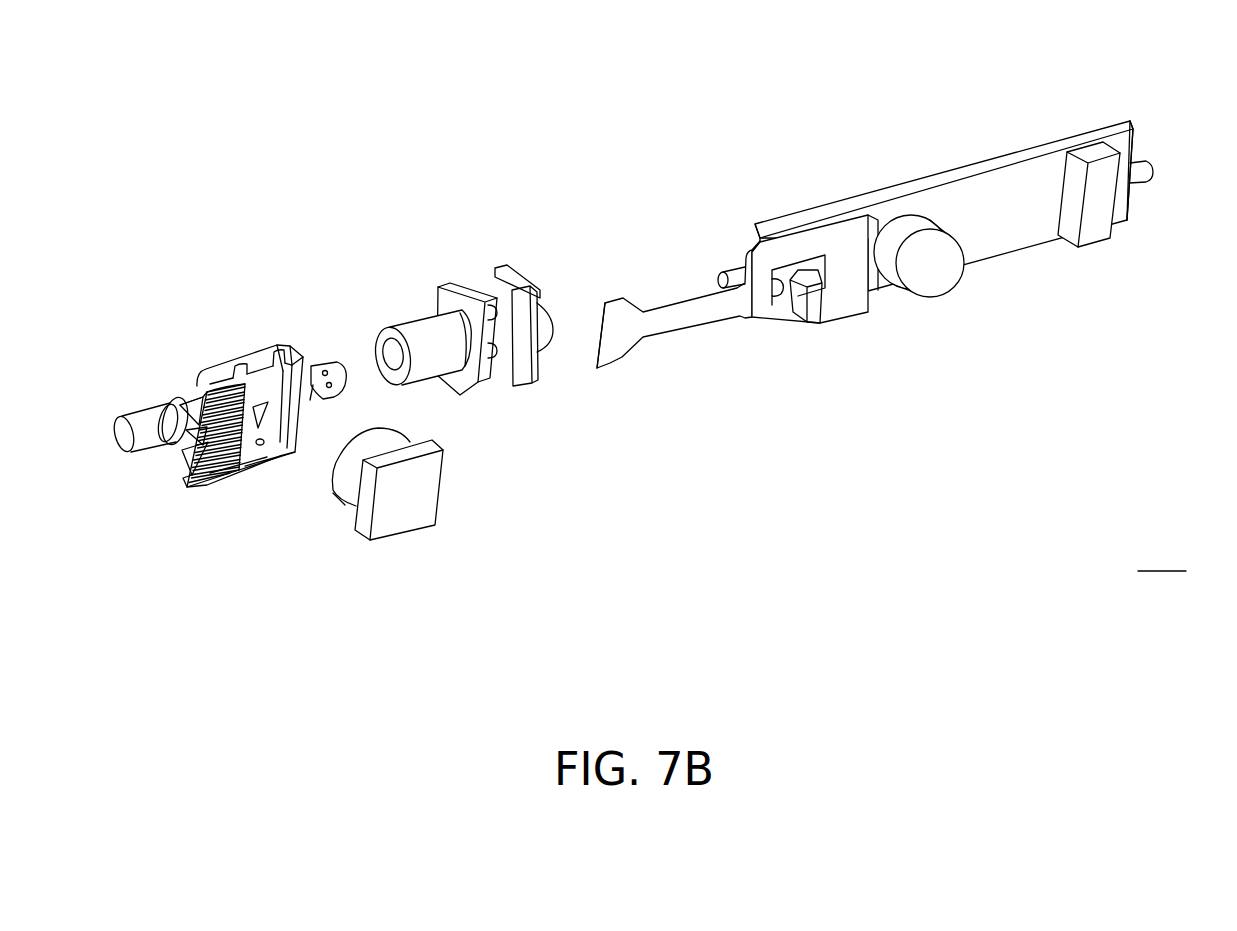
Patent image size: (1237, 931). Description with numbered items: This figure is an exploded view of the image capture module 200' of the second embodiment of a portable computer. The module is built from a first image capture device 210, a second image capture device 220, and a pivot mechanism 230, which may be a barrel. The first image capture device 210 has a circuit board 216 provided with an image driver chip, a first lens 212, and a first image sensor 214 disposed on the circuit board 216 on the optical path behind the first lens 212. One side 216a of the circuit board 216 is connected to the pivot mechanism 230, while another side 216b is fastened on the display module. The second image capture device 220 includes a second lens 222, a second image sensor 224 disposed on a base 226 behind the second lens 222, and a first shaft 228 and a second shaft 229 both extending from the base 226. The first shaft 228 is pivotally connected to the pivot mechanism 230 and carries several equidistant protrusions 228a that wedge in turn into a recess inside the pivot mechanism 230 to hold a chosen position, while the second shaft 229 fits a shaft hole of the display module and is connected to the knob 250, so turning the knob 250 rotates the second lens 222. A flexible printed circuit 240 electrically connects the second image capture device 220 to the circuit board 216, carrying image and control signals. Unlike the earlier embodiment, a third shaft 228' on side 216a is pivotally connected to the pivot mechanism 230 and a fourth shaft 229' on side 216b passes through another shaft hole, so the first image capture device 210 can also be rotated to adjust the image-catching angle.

The image capture module 200' is at (1162, 553).
The first image capture device 210 is at (958, 78).
The first lens 212 is at (937, 233).
The first image sensor 214 is at (883, 213).
The circuit board 216 is at (1007, 182).
The side of the circuit board 216a is at (752, 234).
The another side of the circuit board 216b is at (1140, 140).
The second image capture device 220 is at (394, 626).
The second lens 222 is at (343, 487).
The second image sensor 224 is at (387, 523).
The base 226 is at (253, 463).
The first shaft 228 is at (249, 487).
The protrusions 228a is at (320, 360).
The third shaft 228' is at (699, 245).
The second shaft 229 is at (153, 512).
The fourth shaft 229' is at (1175, 168).
The pivot mechanism 230 is at (420, 333).
The flexible printed circuit 240 is at (655, 327).
The knob 250 is at (203, 395).